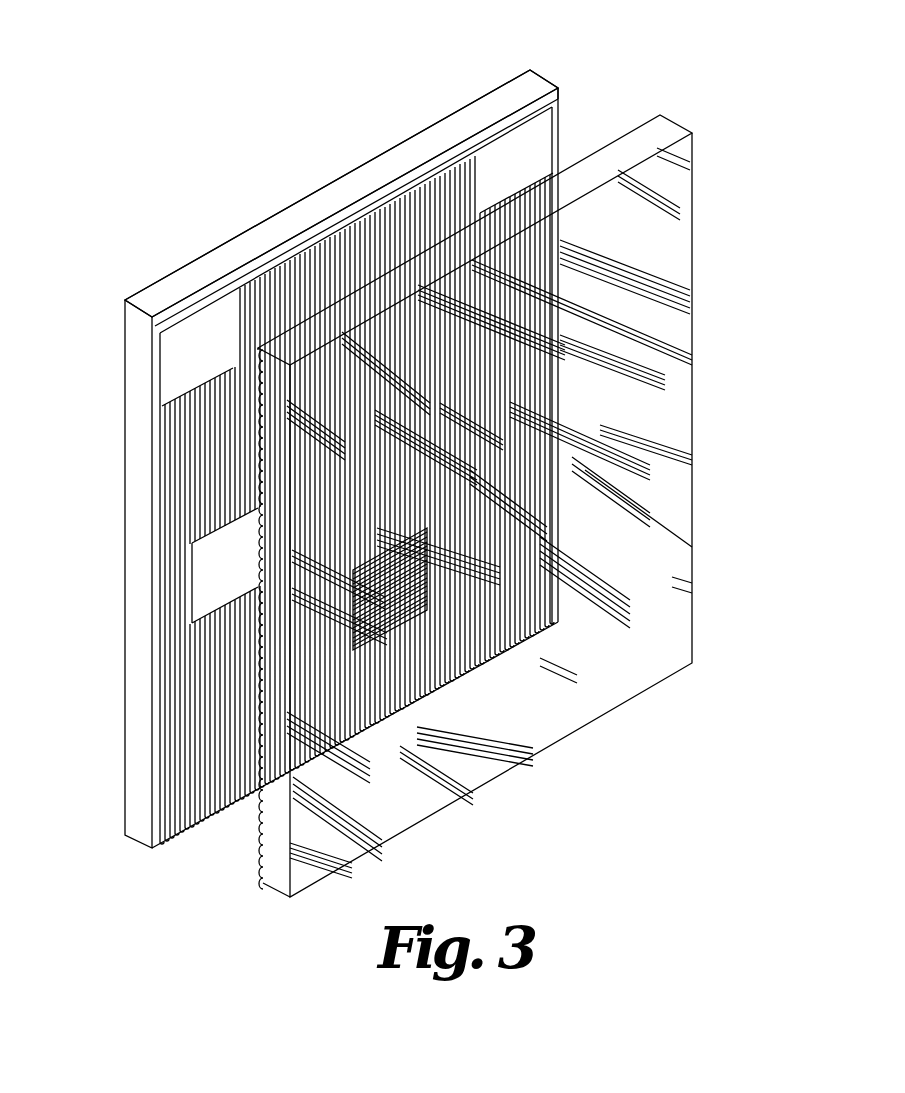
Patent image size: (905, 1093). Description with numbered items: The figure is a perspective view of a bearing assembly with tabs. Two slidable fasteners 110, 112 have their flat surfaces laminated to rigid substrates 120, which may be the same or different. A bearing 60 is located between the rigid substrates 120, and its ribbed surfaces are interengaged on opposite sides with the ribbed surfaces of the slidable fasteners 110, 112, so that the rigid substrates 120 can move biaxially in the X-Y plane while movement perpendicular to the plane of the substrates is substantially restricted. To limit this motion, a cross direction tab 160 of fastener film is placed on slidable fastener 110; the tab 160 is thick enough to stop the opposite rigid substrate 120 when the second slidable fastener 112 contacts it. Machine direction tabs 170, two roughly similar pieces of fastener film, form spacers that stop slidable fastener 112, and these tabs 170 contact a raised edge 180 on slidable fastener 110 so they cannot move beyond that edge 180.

The slidable fastener 110 is at (297, 245).
The slidable fastener 112 is at (260, 847).
The rigid substrate 120 is at (353, 180).
The cross direction tab 160 is at (209, 575).
The machine direction tabs 170 is at (180, 330).
The raised edge 180 is at (437, 153).
The bearing 60 is at (432, 620).